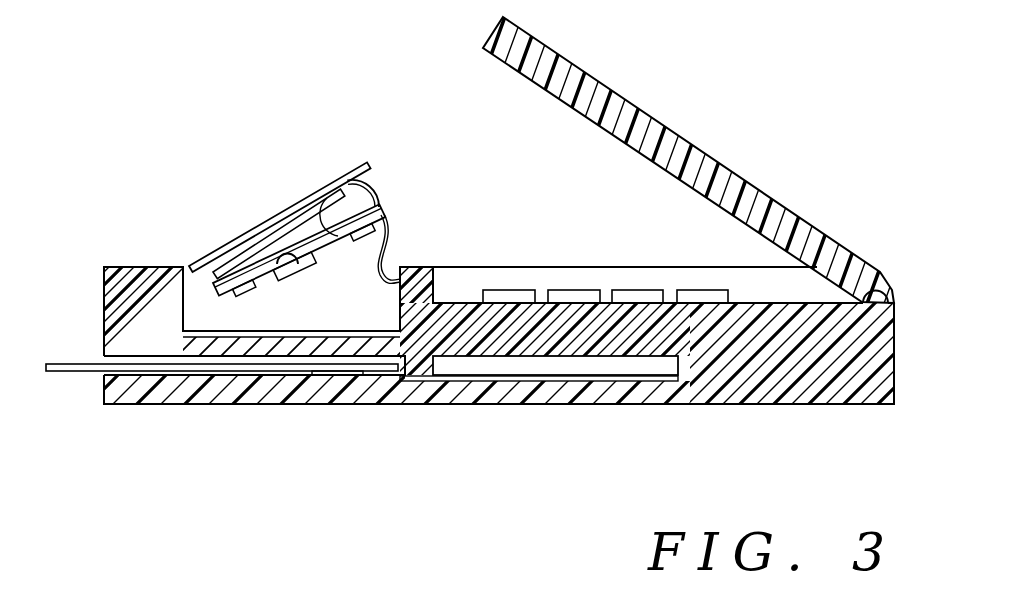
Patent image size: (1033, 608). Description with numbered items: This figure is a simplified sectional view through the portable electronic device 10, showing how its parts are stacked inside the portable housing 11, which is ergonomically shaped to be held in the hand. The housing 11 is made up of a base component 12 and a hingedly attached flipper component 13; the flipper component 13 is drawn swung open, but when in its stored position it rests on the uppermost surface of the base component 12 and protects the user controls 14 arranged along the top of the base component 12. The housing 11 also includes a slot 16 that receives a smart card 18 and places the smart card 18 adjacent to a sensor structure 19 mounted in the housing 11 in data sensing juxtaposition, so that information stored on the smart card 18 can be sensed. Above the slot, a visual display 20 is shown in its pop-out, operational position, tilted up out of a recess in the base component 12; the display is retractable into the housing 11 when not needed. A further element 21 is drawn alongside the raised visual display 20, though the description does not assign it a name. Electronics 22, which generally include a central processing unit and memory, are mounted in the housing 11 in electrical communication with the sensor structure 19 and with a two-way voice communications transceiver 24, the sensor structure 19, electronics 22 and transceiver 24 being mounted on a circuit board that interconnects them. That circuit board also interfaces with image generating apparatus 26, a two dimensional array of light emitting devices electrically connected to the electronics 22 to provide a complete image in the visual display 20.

The portable electronic device 10 is at (713, 491).
The portable housing 11 is at (738, 386).
The base component 12 is at (850, 394).
The flipper component 13 is at (719, 176).
The user controls 14 is at (503, 293).
The slot 16 is at (107, 375).
The smart card 18 is at (73, 362).
The sensor structure 19 is at (347, 375).
The visual display 20 is at (301, 178).
The flexible circuit 21 is at (392, 180).
The electronics 22 is at (470, 380).
The two-way voice communications transceiver 24 is at (588, 370).
The image generating apparatus 26 is at (289, 269).